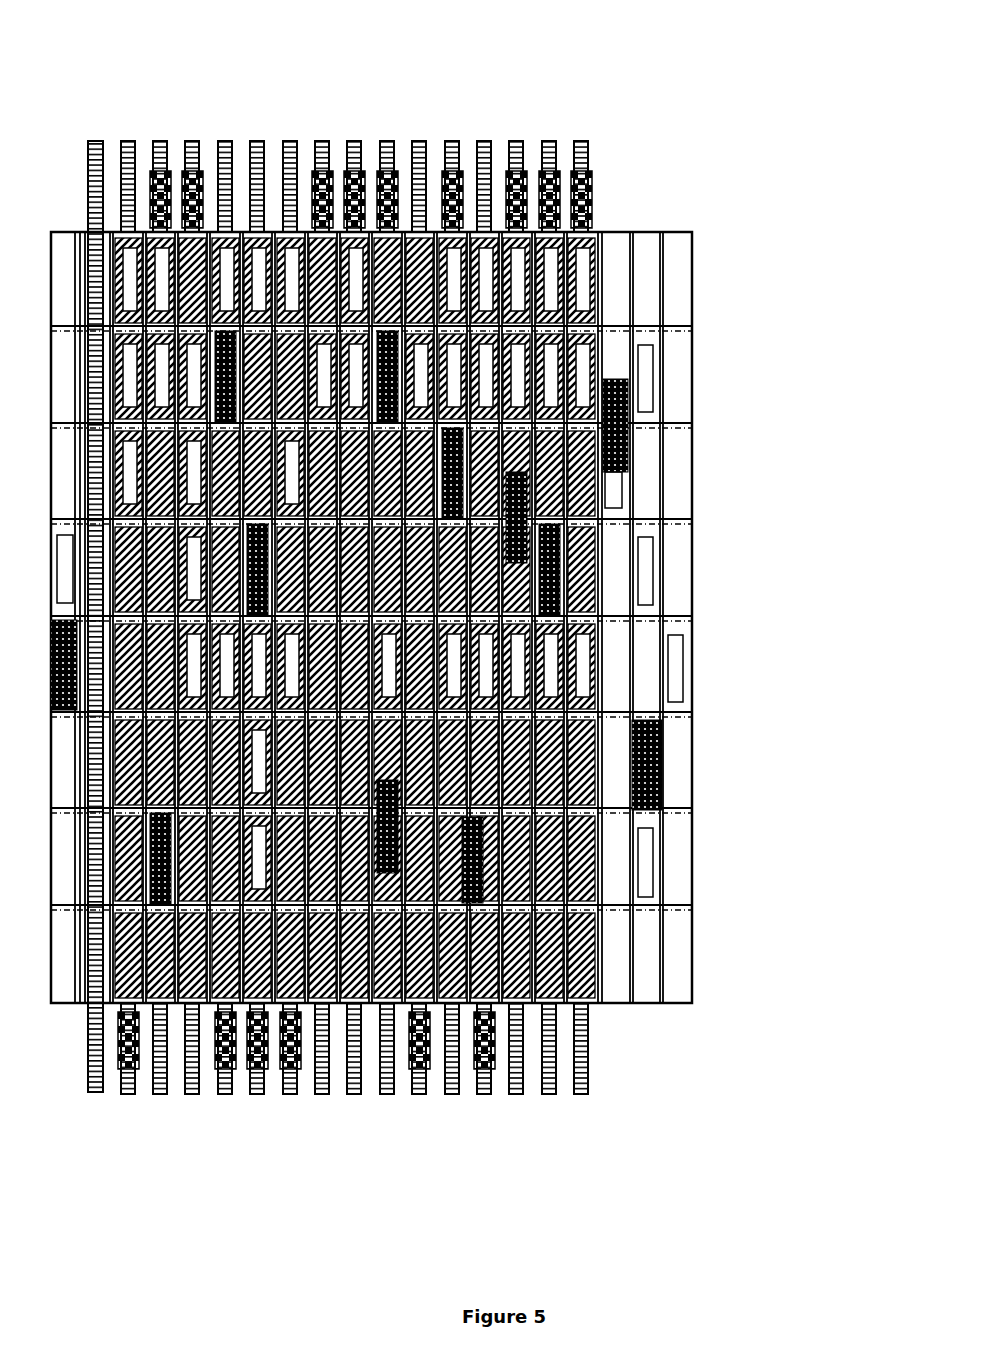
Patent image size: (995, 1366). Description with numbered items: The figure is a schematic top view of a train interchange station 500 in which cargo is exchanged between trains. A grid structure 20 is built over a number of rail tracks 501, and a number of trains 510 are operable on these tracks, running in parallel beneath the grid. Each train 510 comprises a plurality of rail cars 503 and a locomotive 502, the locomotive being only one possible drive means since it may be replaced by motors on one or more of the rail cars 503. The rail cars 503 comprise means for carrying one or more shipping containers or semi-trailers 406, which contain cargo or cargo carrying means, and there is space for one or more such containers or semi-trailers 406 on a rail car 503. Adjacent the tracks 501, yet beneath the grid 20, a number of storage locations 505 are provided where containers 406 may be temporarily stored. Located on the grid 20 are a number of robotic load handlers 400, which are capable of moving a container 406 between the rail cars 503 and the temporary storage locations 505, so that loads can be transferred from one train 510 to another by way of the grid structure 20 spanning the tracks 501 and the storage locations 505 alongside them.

The train interchange station 500 is at (448, 589).
The locomotive 502 is at (606, 198).
The grid structure 20 is at (704, 287).
The storage locations 505 is at (687, 483).
The shipping containers or semi-trailers 406 is at (689, 670).
The robotic load handlers 400 is at (677, 763).
The rail cars 503 is at (612, 957).
The rail tracks 501 is at (106, 1096).
The trains 510 is at (510, 1028).